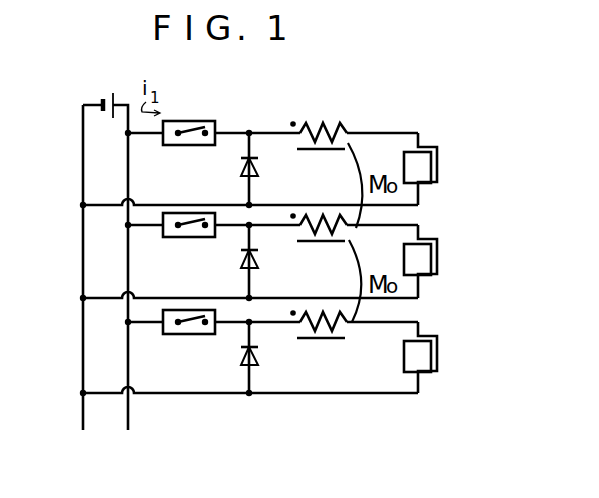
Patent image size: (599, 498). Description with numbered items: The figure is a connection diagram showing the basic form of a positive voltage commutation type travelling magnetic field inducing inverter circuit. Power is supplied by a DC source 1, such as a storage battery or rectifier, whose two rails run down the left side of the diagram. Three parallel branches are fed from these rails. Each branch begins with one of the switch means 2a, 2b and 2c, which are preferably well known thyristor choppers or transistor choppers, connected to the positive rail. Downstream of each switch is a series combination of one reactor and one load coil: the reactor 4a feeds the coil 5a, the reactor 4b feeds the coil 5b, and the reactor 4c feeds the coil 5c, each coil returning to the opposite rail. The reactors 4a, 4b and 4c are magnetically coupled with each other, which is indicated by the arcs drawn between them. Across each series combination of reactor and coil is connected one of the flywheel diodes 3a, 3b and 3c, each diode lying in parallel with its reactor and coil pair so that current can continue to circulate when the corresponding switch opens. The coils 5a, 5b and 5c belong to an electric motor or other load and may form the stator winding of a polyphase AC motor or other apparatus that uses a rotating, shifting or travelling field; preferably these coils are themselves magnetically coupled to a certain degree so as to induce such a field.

The DC source 1 is at (103, 98).
The switch means 2a is at (165, 119).
The switch means 2b is at (171, 212).
The switch means 2c is at (171, 307).
The flywheel diode 3a is at (266, 162).
The flywheel diode 3b is at (266, 254).
The flywheel diode 3c is at (266, 351).
The reactor 4a is at (318, 120).
The reactor 4b is at (319, 216).
The reactor 4c is at (317, 308).
The coil 5a is at (438, 168).
The coil 5b is at (438, 260).
The coil 5c is at (438, 357).